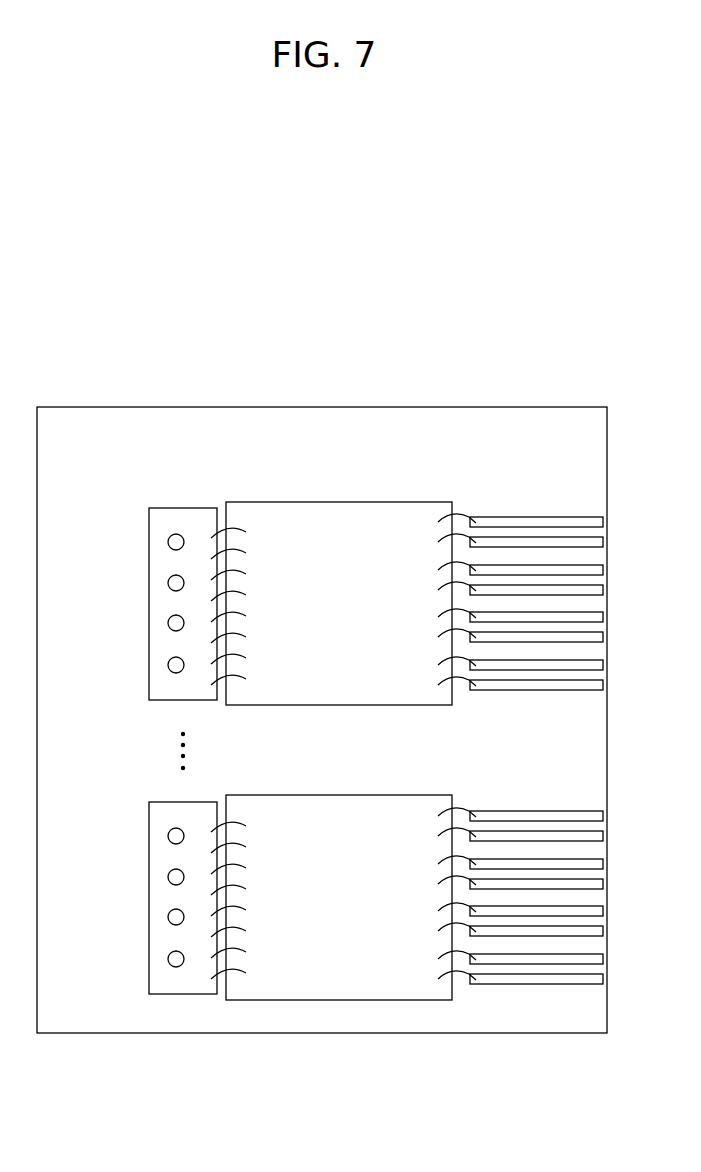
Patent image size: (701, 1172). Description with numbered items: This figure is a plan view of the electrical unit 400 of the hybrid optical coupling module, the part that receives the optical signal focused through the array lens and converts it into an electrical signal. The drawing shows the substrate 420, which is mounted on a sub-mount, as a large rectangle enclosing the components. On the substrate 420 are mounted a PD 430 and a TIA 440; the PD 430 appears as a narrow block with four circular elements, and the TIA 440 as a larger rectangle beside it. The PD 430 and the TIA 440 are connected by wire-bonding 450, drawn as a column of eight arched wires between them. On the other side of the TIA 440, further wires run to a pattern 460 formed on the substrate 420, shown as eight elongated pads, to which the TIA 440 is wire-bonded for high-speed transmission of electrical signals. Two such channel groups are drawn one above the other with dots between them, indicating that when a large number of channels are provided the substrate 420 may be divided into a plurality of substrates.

The electrical unit 400 is at (195, 322).
The substrate 420 is at (408, 421).
The PD 430 is at (172, 517).
The TIA 440 is at (318, 513).
The wire-bonding 450 is at (221, 530).
The pattern 460 is at (544, 521).